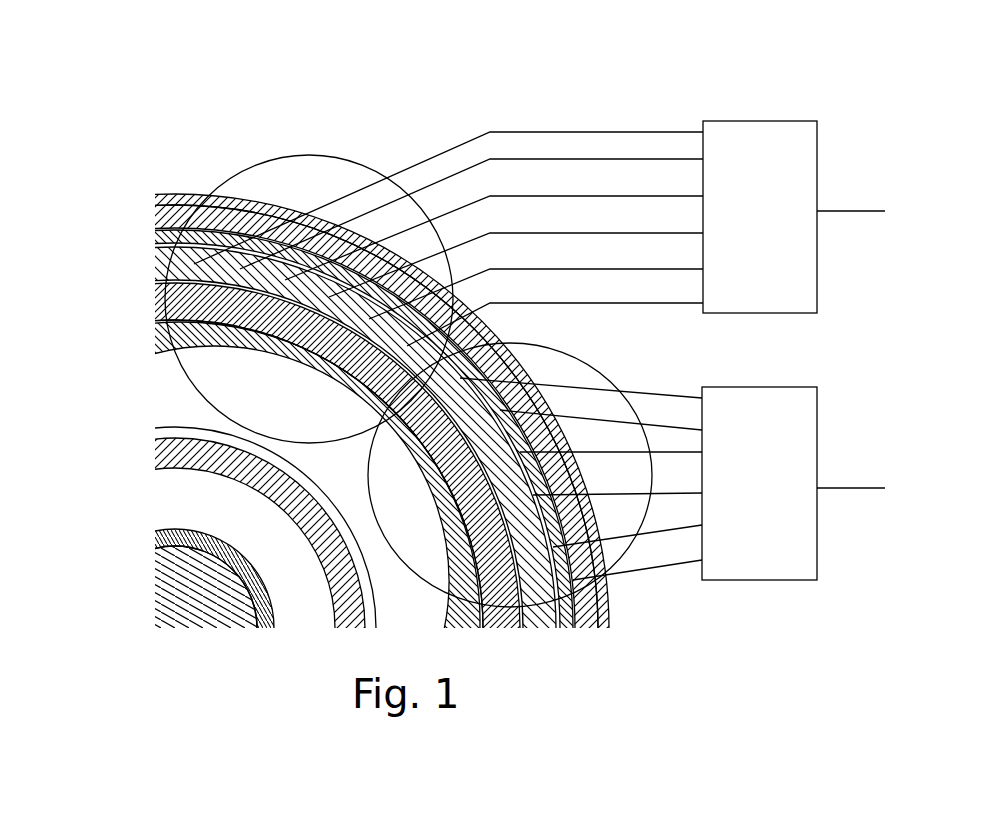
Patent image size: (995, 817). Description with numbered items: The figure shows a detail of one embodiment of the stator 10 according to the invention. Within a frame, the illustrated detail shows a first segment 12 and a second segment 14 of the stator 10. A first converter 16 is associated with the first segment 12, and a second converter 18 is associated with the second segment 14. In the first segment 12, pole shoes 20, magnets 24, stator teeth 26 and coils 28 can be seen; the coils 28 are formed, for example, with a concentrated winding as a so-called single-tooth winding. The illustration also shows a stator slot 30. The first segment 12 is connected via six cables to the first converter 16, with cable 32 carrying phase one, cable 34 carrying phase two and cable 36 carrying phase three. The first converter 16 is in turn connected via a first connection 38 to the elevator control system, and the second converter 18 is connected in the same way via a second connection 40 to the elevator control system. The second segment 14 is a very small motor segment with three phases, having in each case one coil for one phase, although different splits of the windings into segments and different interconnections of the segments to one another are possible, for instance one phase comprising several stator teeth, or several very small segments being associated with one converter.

The stator 10 is at (304, 475).
The first segment 12 is at (285, 153).
The second segment 14 is at (240, 569).
The first converter 16 is at (806, 120).
The second converter 18 is at (792, 386).
The pole shoes 20 is at (241, 568).
The magnets 24 is at (127, 495).
The stator teeth 26 is at (260, 449).
The coils 28 is at (278, 447).
The stator slot 30 is at (299, 511).
The cable 32 is at (622, 303).
The cable 34 is at (623, 197).
The cable 36 is at (552, 158).
The first connection 38 is at (860, 211).
The second connection 40 is at (857, 488).